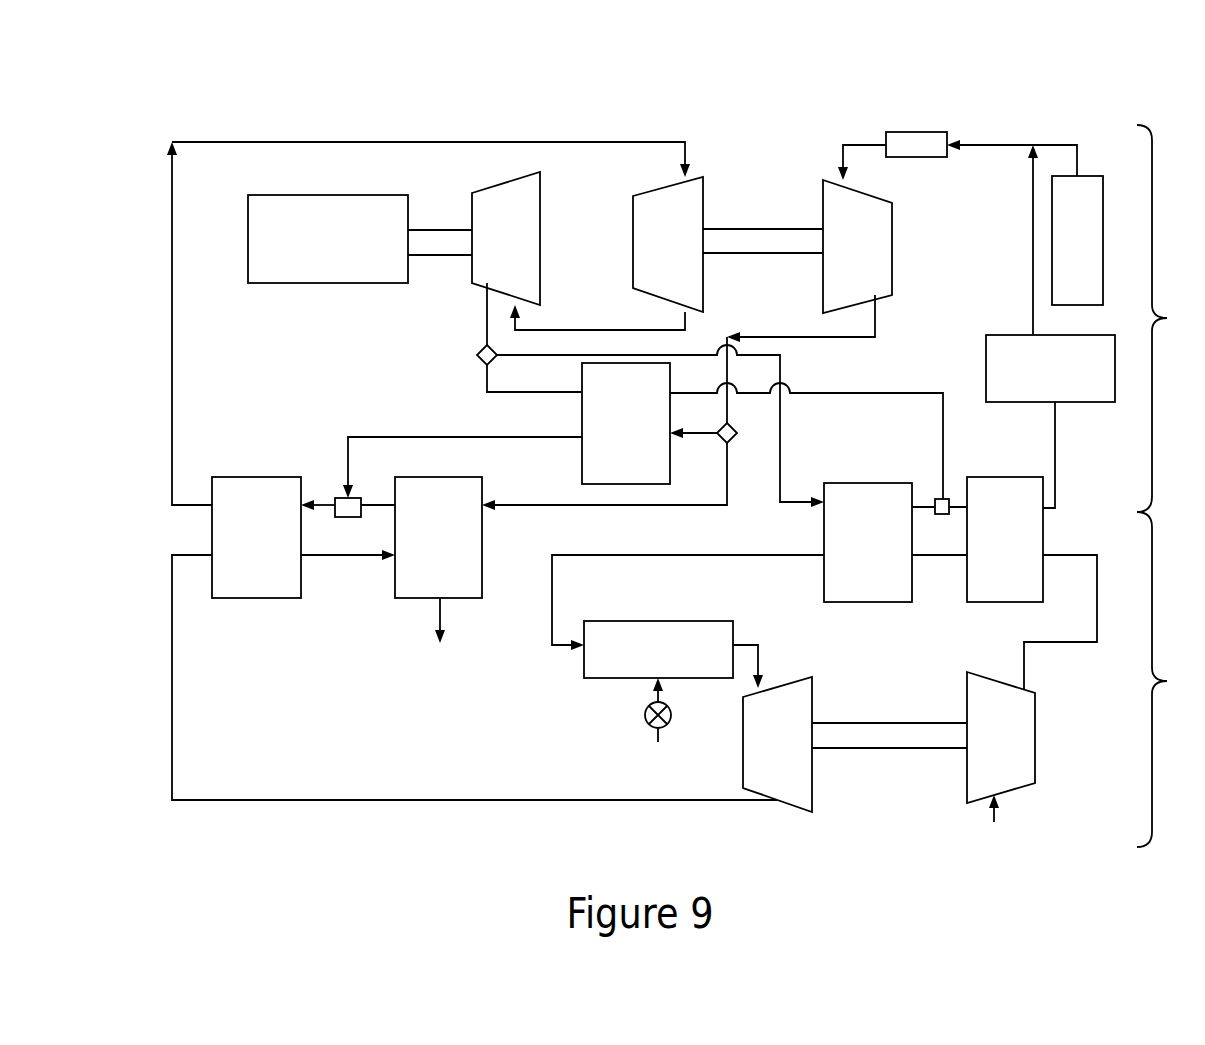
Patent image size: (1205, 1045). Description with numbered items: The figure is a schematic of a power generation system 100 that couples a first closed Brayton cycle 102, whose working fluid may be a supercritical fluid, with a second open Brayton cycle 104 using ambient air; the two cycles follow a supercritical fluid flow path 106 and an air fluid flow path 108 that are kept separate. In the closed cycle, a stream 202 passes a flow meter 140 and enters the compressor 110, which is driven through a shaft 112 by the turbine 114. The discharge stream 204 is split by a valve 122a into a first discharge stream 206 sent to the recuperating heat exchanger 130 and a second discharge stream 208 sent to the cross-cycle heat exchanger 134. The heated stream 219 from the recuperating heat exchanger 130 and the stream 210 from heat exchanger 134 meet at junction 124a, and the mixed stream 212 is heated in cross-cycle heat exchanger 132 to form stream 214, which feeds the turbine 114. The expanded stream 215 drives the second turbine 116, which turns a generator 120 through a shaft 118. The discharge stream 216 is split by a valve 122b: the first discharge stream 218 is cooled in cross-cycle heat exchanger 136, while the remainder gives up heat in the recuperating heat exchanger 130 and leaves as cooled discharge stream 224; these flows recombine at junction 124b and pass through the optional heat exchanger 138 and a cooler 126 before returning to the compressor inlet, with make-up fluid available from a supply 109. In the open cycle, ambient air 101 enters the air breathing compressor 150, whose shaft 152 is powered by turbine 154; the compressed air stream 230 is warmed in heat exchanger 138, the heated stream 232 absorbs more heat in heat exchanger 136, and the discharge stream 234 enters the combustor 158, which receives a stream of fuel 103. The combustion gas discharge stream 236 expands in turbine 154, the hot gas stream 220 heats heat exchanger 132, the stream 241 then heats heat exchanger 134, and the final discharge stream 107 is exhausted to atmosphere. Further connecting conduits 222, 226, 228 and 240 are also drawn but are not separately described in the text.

The power generation system 100 is at (180, 103).
The ambient air 101 is at (992, 862).
The first closed Brayton cycle 102 is at (1168, 318).
The stream of fuel 103 is at (655, 782).
The second open Brayton cycle 104 is at (1168, 679).
The supercritical fluid flow path 106 is at (642, 128).
The discharge stream 107 is at (445, 688).
The air fluid flow path 108 is at (735, 827).
The supply 109 is at (1090, 176).
The compressor 110 is at (892, 245).
The shaft 112 is at (760, 240).
The turbine 114 is at (633, 222).
The second SCO2 turbine 116 is at (505, 177).
The shaft 118 is at (440, 230).
The generator 120 is at (248, 238).
The valve 122a is at (737, 441).
The valve 122b is at (478, 350).
The junction 124a is at (346, 519).
The junction 124b is at (949, 512).
The cooler 126 is at (1115, 360).
The recuperating heat exchanger 130 is at (582, 458).
The cross-cycle heat exchanger 132 is at (260, 598).
The cross-cycle heat exchanger 134 is at (482, 545).
The cross-cycle heat exchanger 136 is at (870, 602).
The cross-cycle heat exchanger 138 is at (1005, 602).
The flow meter 140 is at (912, 132).
The air breathing compressor 150 is at (1035, 735).
The shaft 152 is at (925, 723).
The turbine 154 is at (812, 790).
The combustor 158 is at (608, 680).
The stream of supercritical fluid 202 is at (993, 145).
The discharge stream 204 is at (875, 325).
The first discharge stream 206 is at (703, 440).
The second discharge stream 208 is at (640, 507).
The stream 210 is at (365, 503).
The mixed stream 212 is at (328, 503).
The stream of heated SCO2 214 is at (172, 370).
The stream 215 is at (605, 330).
The discharge stream 216 is at (487, 318).
The first discharge stream 218 is at (575, 357).
The stream 219 is at (360, 437).
The stream of expanded hot combustion gas 220 is at (927, 505).
The flow line 222 is at (505, 392).
The discharge stream 224 is at (920, 393).
The flow line 226 is at (949, 500).
The flow line 228 is at (1055, 465).
The stream of compressed air 230 is at (1100, 612).
The stream of heated compressed air 232 is at (948, 556).
The discharge stream 234 is at (768, 557).
The discharge stream of combustion gas 236 is at (760, 657).
The flow line 240 is at (352, 800).
The stream of hot combustion gas 241 is at (360, 557).